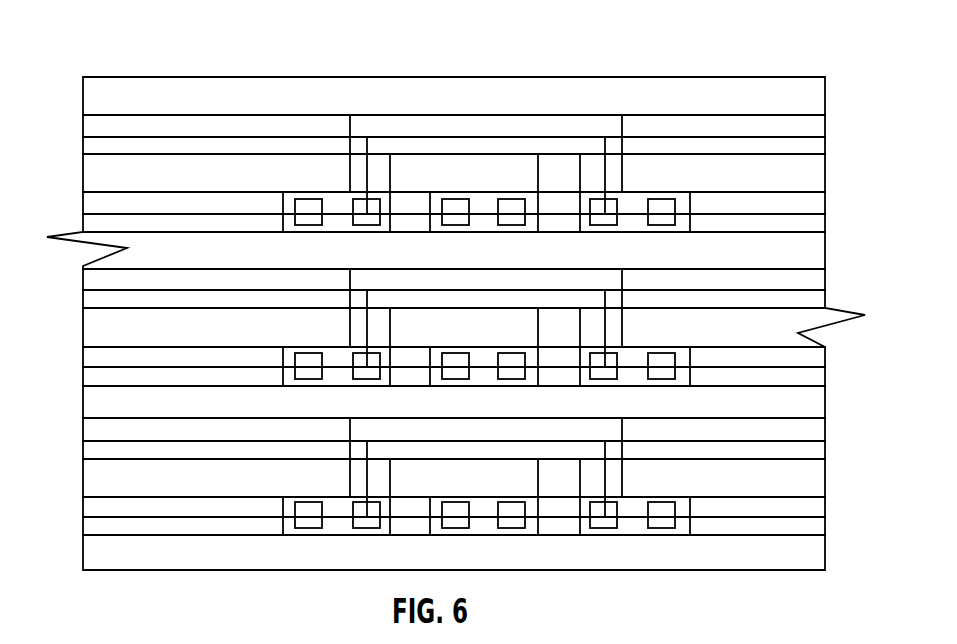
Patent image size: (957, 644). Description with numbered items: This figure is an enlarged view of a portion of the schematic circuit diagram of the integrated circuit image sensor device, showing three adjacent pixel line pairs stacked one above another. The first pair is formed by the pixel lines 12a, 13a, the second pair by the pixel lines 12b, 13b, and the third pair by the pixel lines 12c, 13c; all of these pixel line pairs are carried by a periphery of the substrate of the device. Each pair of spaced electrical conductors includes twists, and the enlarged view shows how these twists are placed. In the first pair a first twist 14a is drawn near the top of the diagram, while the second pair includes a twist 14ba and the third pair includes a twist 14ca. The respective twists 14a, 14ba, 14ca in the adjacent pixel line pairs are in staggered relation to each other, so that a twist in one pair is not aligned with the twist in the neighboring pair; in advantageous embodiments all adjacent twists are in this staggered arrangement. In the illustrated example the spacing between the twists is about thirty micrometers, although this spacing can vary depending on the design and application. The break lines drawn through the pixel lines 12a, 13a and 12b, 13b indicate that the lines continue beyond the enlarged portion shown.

The pixel line 12a is at (263, 77).
The pixel line 13a is at (83, 193).
The first twist 14a is at (523, 77).
The twist 14ba is at (567, 264).
The pixel line 12b is at (83, 290).
The pixel line 13b is at (83, 357).
The twist 14ca is at (580, 416).
The pixel line 12c is at (83, 430).
The pixel line 13c is at (83, 510).